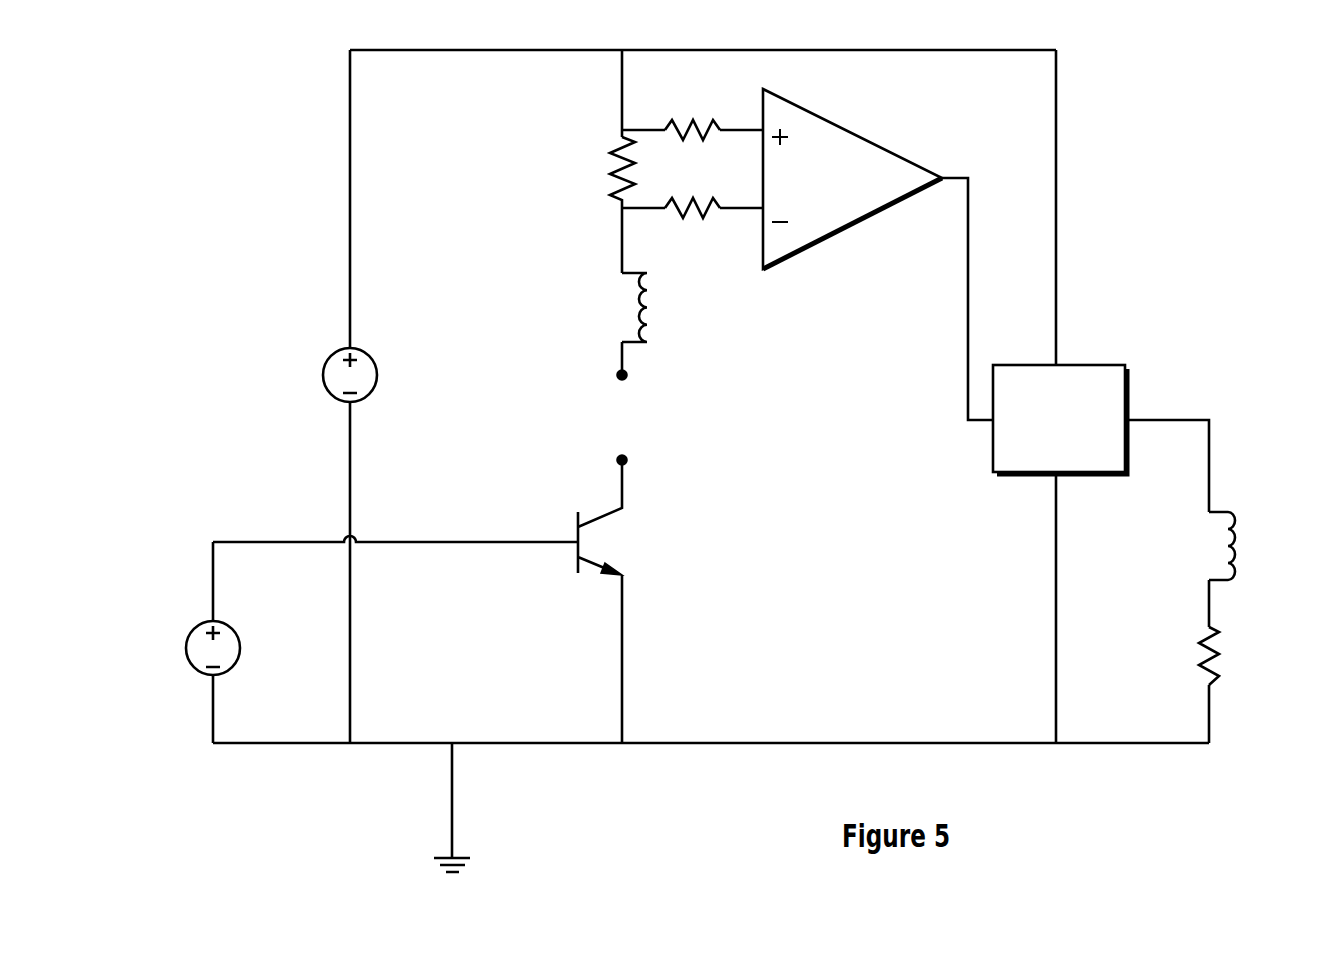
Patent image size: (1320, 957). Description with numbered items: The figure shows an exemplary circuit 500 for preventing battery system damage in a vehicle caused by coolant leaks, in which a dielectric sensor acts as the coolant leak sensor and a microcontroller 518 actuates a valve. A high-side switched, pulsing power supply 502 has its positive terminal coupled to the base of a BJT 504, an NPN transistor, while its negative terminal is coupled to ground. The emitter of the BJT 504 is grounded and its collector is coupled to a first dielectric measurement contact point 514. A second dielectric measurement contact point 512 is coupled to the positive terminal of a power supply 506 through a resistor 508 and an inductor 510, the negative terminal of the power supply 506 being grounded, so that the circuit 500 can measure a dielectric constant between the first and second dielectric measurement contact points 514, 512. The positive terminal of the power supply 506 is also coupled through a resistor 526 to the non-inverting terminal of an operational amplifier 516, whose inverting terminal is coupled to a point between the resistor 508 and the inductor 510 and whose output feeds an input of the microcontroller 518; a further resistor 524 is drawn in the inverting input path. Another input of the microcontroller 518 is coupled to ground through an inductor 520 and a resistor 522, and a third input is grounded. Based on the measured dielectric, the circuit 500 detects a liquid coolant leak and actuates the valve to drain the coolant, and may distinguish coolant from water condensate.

The circuit 500 is at (262, 58).
The HS switched power supply 502 is at (187, 648).
The BJT 504 is at (599, 568).
The power supply 506 is at (323, 370).
The resistor 508 is at (609, 176).
The inductor 510 is at (656, 283).
The second dielectric measurement contact point 512 is at (618, 375).
The first dielectric measurement contact point 514 is at (618, 460).
The operational amplifier 516 is at (876, 140).
The microcontroller 518 is at (1060, 419).
The inductor 520 is at (1238, 540).
The resistor 522 is at (1219, 628).
The resistor 524 is at (713, 216).
The resistor 526 is at (692, 120).